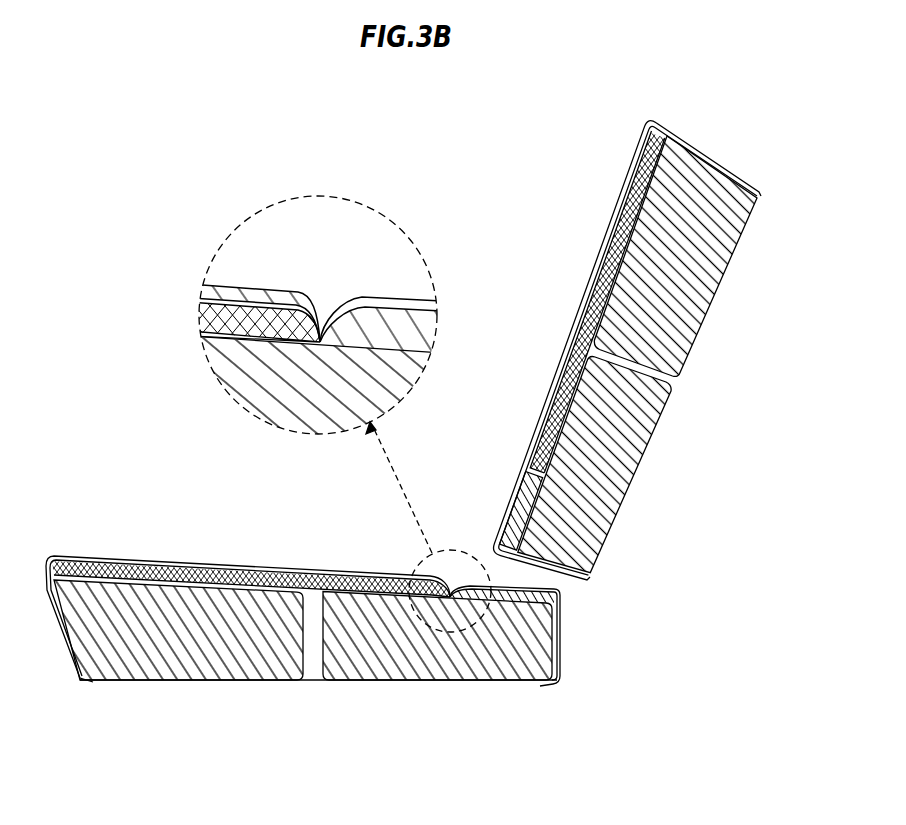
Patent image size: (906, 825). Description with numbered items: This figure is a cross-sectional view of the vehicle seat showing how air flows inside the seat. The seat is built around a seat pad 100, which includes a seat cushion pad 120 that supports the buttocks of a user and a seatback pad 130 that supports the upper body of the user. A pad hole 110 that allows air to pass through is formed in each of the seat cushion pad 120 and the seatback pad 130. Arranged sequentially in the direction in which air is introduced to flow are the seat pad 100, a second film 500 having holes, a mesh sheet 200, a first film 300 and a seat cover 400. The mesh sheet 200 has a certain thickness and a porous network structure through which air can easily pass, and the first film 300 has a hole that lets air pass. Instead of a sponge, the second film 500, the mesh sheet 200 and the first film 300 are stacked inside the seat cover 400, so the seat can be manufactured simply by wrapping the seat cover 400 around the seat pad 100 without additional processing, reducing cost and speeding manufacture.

The seat pad 100 is at (404, 436).
The pad hole 110 is at (322, 681).
The seat cushion pad 120 is at (533, 637).
The seatback pad 130 is at (583, 528).
The mesh sheet 200 is at (210, 318).
The first film 300 is at (208, 301).
The seat cover 400 is at (222, 291).
The second film 500 is at (212, 338).